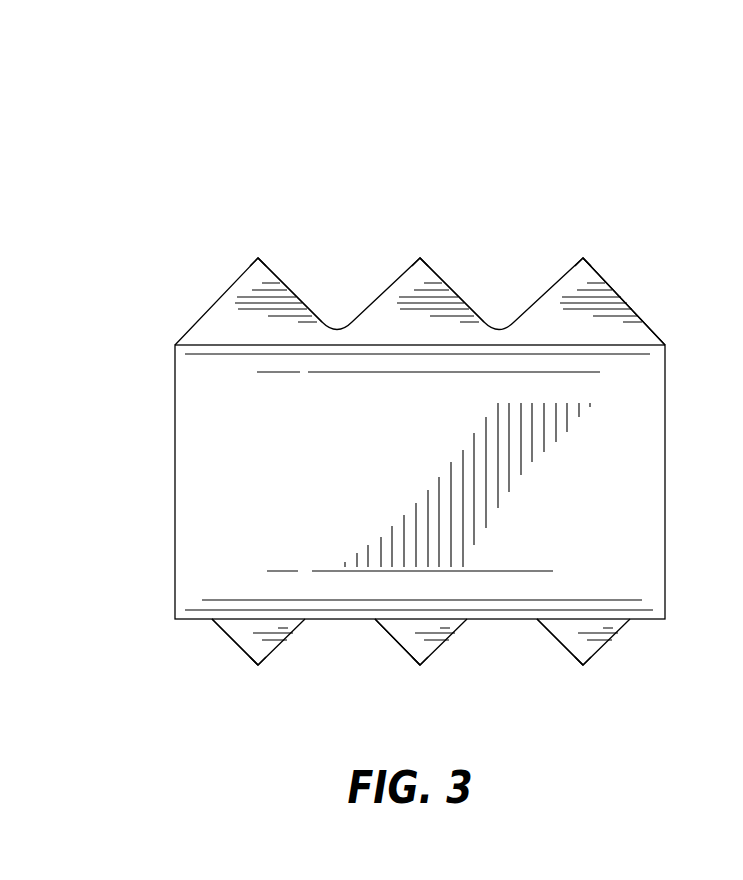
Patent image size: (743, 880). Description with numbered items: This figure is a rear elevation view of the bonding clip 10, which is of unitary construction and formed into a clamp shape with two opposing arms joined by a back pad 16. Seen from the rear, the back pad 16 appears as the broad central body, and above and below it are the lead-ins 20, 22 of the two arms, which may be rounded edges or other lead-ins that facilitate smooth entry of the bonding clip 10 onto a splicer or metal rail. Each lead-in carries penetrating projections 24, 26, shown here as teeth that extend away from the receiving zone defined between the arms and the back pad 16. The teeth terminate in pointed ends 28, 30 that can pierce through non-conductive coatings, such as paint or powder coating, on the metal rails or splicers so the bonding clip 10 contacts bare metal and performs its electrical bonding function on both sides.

The bonding clip 10 is at (334, 161).
The back pad 16 is at (389, 489).
The lead-in 20 is at (196, 295).
The lead-in 22 is at (189, 632).
The penetrating projections 24 is at (283, 283).
The penetrating projections 26 is at (233, 642).
The pointed end 28 is at (258, 258).
The pointed end 30 is at (258, 665).